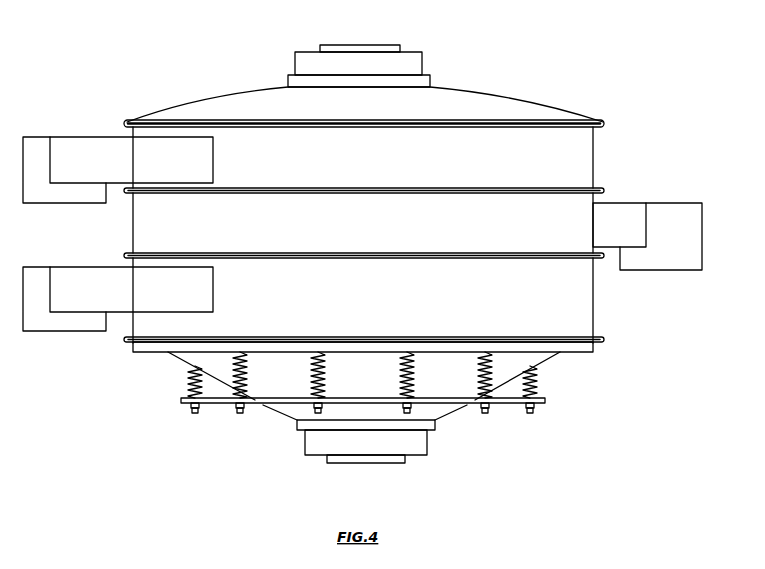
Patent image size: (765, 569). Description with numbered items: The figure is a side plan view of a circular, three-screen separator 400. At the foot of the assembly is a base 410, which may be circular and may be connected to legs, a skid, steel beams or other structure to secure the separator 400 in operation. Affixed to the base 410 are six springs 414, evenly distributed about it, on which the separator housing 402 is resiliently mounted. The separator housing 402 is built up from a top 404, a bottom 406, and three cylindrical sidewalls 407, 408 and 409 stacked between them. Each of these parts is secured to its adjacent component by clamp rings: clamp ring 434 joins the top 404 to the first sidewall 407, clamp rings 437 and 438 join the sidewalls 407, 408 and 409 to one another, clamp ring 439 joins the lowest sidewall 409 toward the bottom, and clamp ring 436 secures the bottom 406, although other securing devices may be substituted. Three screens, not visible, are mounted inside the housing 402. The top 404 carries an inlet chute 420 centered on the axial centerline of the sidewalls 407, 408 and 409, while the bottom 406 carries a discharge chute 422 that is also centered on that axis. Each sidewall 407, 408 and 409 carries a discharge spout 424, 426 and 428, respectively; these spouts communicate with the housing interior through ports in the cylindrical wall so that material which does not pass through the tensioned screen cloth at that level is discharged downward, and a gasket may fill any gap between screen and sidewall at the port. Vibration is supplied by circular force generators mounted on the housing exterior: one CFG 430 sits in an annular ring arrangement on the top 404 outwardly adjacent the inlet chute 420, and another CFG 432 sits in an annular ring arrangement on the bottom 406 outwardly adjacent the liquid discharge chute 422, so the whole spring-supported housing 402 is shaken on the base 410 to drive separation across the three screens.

The separator 400 is at (563, 61).
The separator housing 402 is at (585, 109).
The top 404 is at (236, 94).
The bottom 406 is at (445, 419).
The sidewall 407 is at (598, 157).
The sidewall 408 is at (131, 233).
The sidewall 409 is at (596, 305).
The base 410 is at (549, 401).
The springs 414 is at (538, 378).
The inlet chute 420 is at (336, 43).
The discharge chute 422 is at (371, 465).
The discharge spout 424 is at (118, 170).
The discharge spout 426 is at (647, 236).
The discharge spout 428 is at (118, 299).
The circular force generator 430 is at (413, 49).
The circular force generator 432 is at (313, 457).
The clamp ring 434 is at (121, 121).
The clamp ring 436 is at (126, 342).
The clamp ring 437 is at (601, 190).
The clamp ring 438 is at (125, 255).
The clamp ring 439 is at (602, 338).